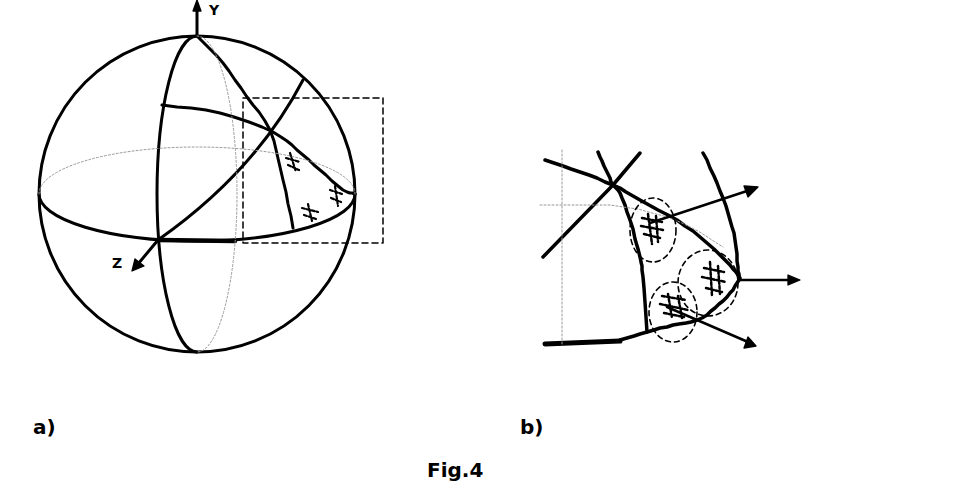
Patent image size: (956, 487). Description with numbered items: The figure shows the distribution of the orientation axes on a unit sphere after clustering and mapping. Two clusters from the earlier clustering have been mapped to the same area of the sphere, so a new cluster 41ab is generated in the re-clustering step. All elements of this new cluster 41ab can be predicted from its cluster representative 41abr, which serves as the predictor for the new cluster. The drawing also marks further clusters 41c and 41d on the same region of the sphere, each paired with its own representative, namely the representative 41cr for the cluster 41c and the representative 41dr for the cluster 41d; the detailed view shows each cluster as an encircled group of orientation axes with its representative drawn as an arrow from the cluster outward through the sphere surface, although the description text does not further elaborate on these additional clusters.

The new cluster 41ab is at (662, 187).
The cluster representative 41abr is at (744, 187).
The intersection region c 41c is at (743, 265).
The direction vector of intersection region 41c 41cr is at (800, 276).
The intersection region d 41d is at (684, 344).
The direction vector of intersection region 41d 41dr is at (739, 329).